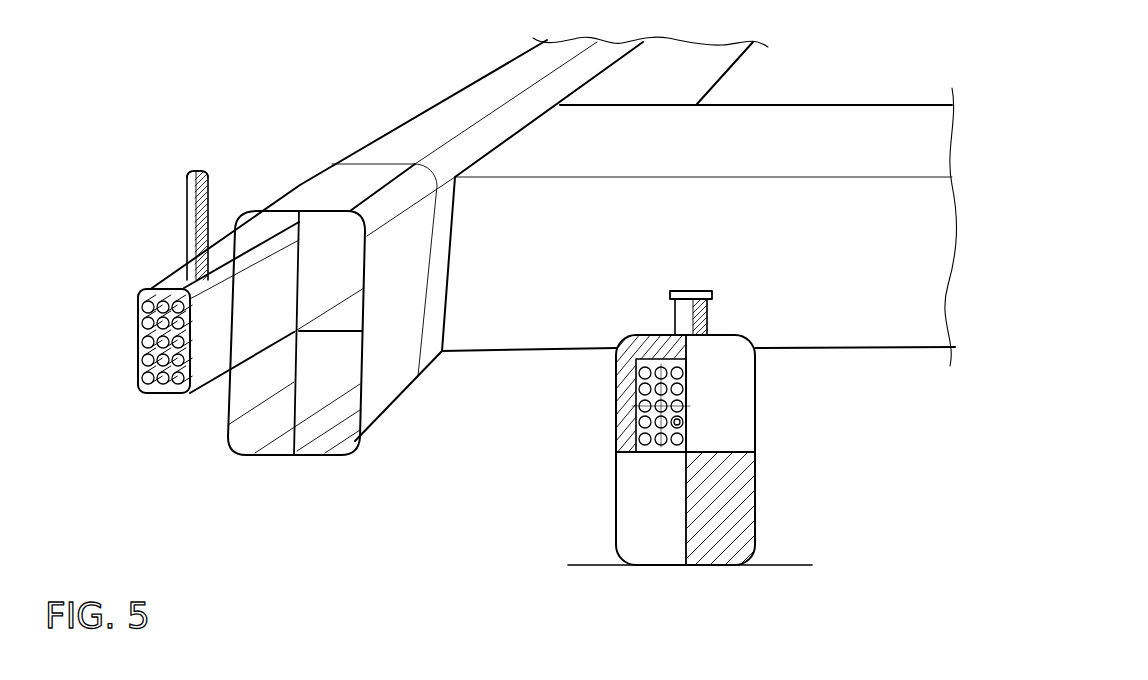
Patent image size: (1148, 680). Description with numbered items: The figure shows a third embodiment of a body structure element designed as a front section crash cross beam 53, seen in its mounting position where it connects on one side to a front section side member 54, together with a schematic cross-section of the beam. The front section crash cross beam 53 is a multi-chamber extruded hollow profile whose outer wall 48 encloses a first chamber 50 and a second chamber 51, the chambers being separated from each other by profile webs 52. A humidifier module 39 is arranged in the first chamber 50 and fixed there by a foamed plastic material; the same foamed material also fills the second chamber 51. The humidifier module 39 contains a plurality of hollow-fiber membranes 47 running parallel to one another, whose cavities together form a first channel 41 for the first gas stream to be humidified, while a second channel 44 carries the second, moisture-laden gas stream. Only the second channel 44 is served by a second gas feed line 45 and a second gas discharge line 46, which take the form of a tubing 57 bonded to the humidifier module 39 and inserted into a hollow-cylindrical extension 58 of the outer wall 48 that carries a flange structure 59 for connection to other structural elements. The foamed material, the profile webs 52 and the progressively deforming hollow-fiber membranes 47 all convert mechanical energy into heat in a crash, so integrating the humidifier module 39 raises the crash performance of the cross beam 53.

The humidifier module 39 is at (167, 279).
The first channel 41 is at (145, 362).
The second channel 44 is at (153, 390).
The second gas feed line 45 is at (677, 312).
The second gas discharge line 46 is at (190, 172).
The hollow-fiber membranes 47 is at (178, 377).
The outer wall 48 is at (415, 129).
The first chamber 50 is at (625, 392).
The second chamber 51 is at (747, 530).
The profile webs 52 is at (294, 395).
The front section crash cross beam 53 is at (346, 154).
The front section side member 54 is at (833, 104).
The tubing 57 is at (185, 220).
The hollow-cylindrical extension 58 is at (704, 323).
The flange structure 59 is at (712, 294).